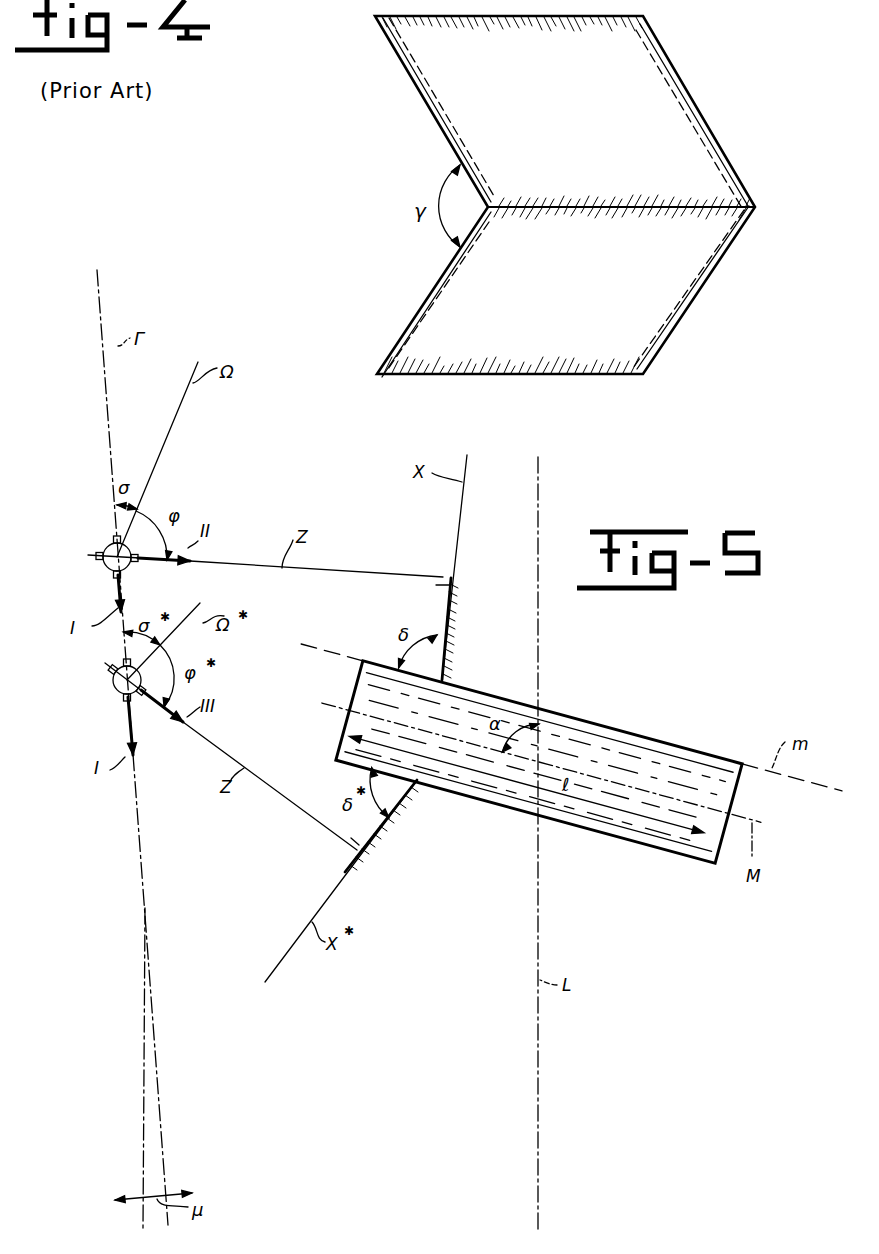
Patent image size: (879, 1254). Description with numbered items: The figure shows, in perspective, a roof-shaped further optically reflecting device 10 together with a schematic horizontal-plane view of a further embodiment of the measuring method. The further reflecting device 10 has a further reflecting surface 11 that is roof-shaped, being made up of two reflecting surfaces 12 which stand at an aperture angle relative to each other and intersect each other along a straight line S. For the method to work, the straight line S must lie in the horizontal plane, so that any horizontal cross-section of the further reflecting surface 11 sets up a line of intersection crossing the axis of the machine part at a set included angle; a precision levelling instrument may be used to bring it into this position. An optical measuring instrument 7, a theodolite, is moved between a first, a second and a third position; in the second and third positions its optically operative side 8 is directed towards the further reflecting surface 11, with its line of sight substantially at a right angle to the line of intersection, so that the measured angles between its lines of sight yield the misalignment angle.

In FIG. 5, the optical measuring instrument 7 is at (103, 573).
In FIG. 5, the optically operative side 8 is at (132, 576).
In FIG. 4, the further optically reflecting device 10 is at (713, 133).
In FIG. 5, the further optically reflecting device 10 is at (457, 557).
In FIG. 4, the further reflecting surface 11 is at (420, 142).
In FIG. 5, the further reflecting surface 11 is at (440, 573).
In FIG. 4, the reflecting surfaces 12 is at (648, 78).
In FIG. 4, the straight line S is at (615, 208).